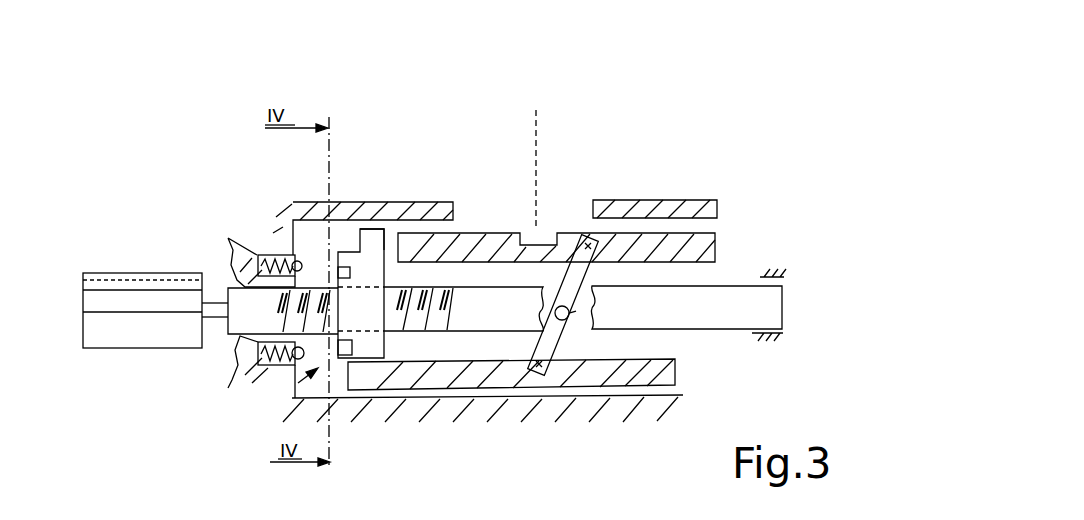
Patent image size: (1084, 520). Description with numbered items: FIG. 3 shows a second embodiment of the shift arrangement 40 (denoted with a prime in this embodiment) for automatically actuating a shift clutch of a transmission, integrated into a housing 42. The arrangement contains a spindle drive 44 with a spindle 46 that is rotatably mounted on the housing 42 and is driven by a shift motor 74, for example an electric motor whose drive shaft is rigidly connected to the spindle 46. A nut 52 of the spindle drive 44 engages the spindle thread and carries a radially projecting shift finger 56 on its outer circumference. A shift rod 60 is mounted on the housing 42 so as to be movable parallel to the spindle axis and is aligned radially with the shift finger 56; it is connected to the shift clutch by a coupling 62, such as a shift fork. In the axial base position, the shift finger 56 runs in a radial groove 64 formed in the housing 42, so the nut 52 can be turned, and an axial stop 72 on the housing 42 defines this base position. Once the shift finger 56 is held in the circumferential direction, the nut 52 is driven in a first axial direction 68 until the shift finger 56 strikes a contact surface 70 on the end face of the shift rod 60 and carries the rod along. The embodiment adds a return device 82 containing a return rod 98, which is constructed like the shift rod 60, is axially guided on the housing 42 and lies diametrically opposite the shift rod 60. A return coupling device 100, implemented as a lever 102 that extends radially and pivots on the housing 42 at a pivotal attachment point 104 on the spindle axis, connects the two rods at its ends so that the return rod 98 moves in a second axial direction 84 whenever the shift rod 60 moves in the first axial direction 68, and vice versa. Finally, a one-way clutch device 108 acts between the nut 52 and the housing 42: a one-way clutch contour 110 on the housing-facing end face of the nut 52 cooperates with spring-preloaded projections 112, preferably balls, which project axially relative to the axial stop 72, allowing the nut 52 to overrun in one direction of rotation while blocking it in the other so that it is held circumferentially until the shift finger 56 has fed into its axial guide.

The shift arrangement 40 is at (707, 110).
The housing 42 is at (328, 210).
The spindle drive 44 is at (318, 390).
The spindle 46 is at (700, 313).
The nut 52 is at (364, 345).
The shift finger 56 is at (370, 234).
The shift rod 60 is at (415, 235).
The coupling 62 is at (537, 152).
The radial groove 64 is at (293, 220).
The first axial direction 68 is at (653, 170).
The contact surface 70 is at (383, 229).
The axial stop 72 is at (288, 368).
The shift motor 74 is at (115, 302).
The return device 82 is at (634, 265).
The second axial direction 84 is at (438, 172).
The return rod 98 is at (484, 370).
The return coupling device 100 is at (580, 347).
The lever 102 is at (559, 322).
The pivotal attachment point 104 is at (572, 313).
The one-way clutch device 108 is at (292, 369).
The one-way clutch contour 110 is at (293, 247).
The projections 112 is at (337, 268).